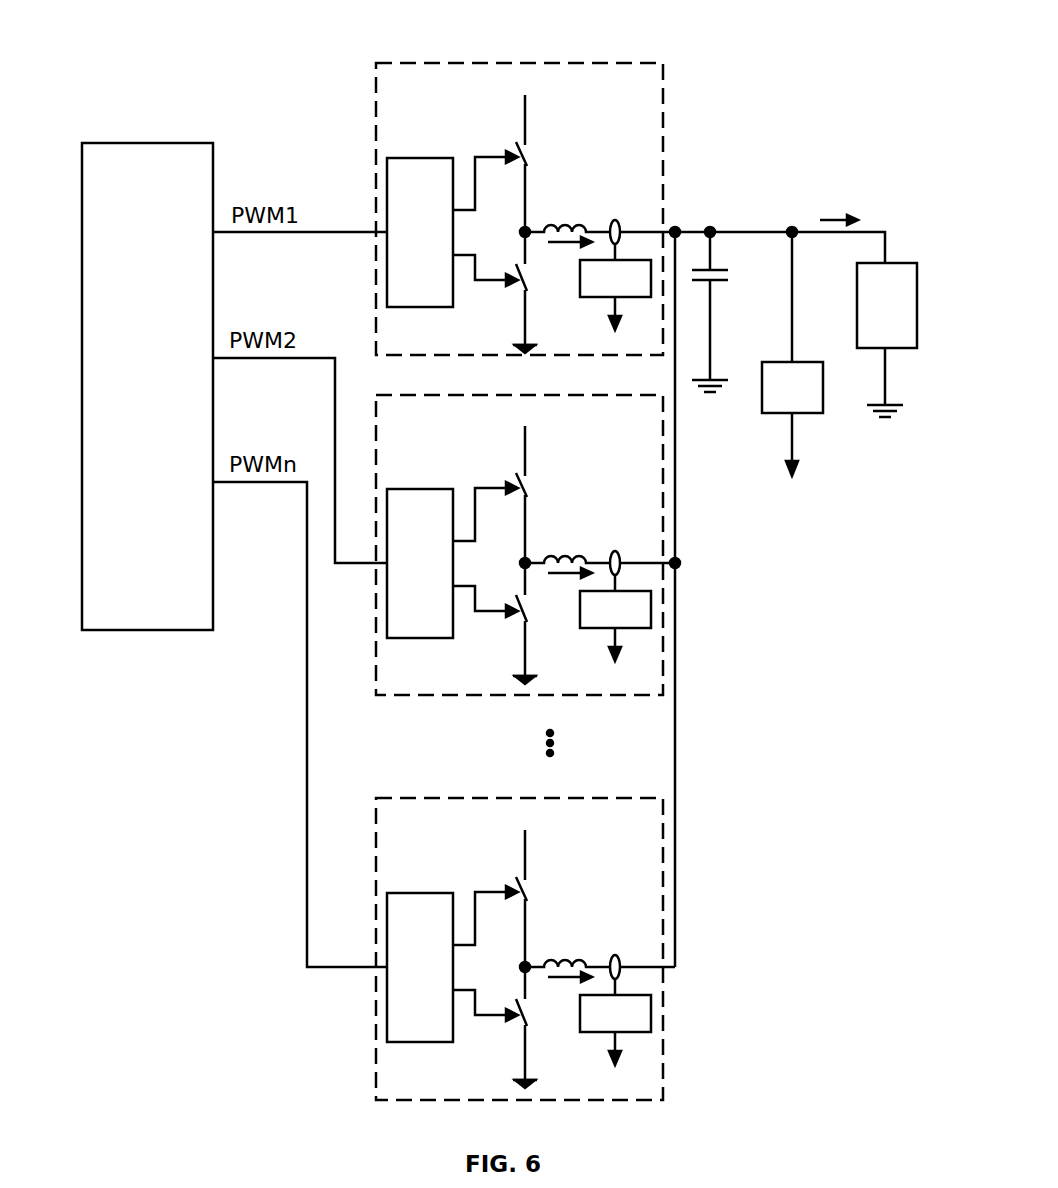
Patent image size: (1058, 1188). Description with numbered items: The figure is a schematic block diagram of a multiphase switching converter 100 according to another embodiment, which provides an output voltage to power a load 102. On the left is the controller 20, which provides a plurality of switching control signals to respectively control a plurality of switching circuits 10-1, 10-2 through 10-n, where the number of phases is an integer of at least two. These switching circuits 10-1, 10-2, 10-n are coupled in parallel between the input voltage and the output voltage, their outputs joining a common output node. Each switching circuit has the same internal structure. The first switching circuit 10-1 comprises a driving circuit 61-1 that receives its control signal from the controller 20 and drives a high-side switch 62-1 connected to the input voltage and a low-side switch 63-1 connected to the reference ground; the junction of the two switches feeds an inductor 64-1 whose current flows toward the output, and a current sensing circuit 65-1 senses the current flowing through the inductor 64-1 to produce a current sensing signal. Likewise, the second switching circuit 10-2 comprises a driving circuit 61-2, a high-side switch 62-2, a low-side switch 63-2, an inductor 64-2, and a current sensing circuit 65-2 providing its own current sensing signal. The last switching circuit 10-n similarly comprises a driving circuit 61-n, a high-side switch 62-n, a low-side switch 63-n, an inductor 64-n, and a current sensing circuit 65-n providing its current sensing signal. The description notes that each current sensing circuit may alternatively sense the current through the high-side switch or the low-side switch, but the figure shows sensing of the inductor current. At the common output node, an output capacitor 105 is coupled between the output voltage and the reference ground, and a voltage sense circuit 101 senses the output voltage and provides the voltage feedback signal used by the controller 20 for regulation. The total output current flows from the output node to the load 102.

The controller 20 is at (142, 143).
The multiphase switching converter 100 is at (818, 107).
The switching circuit 10-1 is at (392, 63).
The switching circuit 10-2 is at (377, 410).
The switching circuit 10-n is at (376, 823).
The driving circuit 61-1 is at (420, 232).
The high-side switch 62-1 is at (530, 155).
The low-side switch 63-1 is at (517, 287).
The inductor 64-1 is at (549, 228).
The current sensing circuit 65-1 is at (615, 275).
The driving circuit 61-2 is at (420, 563).
The high-side switch 62-2 is at (530, 486).
The low-side switch 63-2 is at (517, 618).
The inductor 64-2 is at (549, 559).
The current sensing circuit 65-2 is at (615, 618).
The driving circuit 61-n is at (420, 967).
The high-side switch 62-n is at (530, 890).
The low-side switch 63-n is at (517, 1022).
The inductor 64-n is at (549, 963).
The current sensing circuit 65-n is at (615, 1022).
The voltage sense circuit 101 is at (792, 372).
The load 102 is at (887, 340).
The output capacitor 105 is at (722, 292).